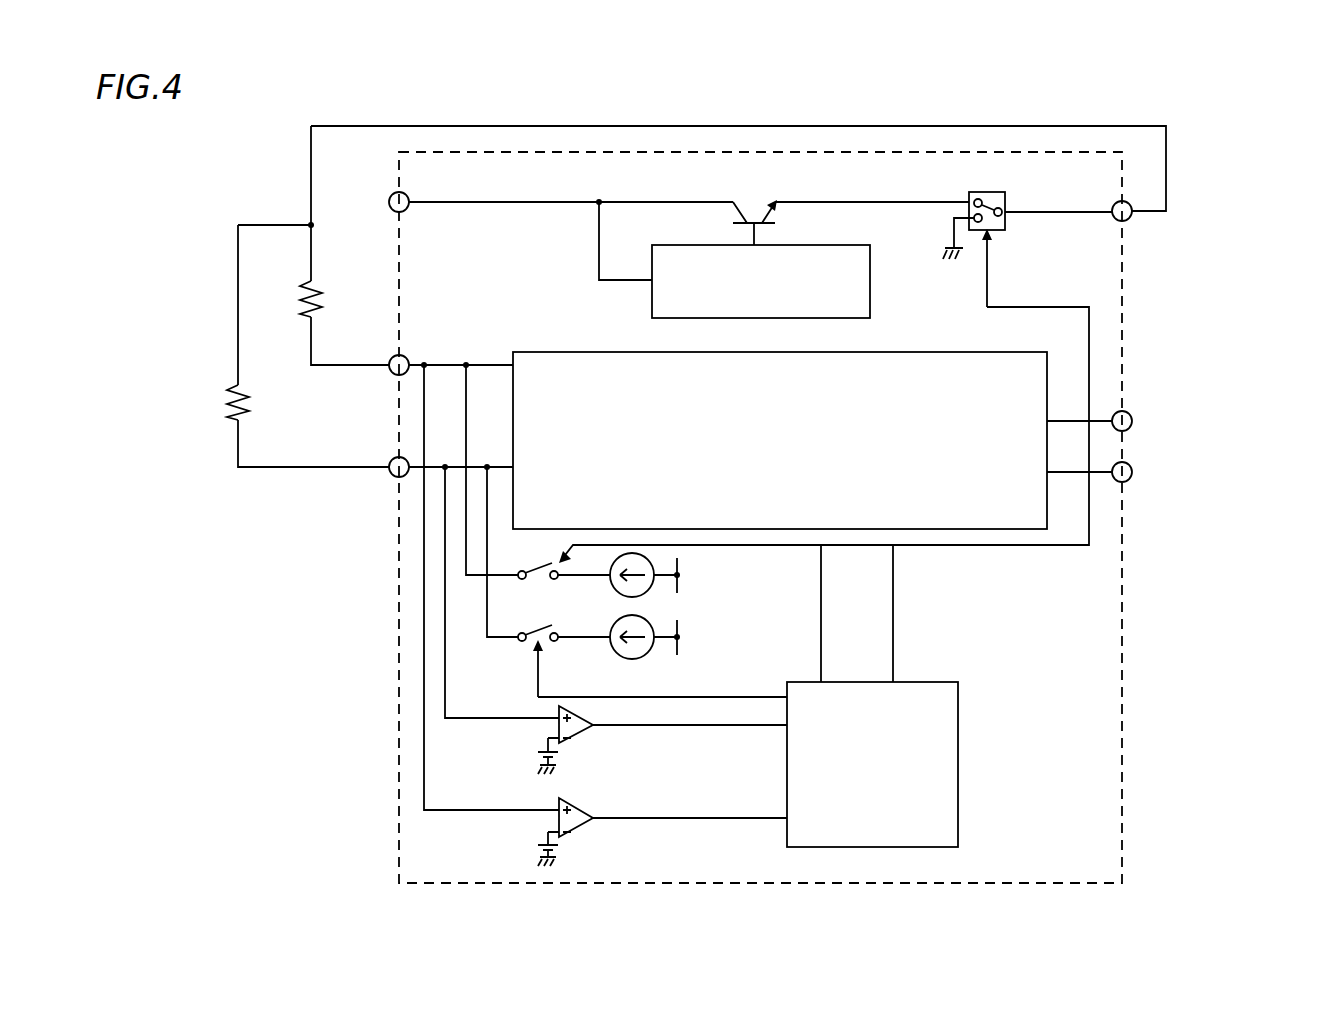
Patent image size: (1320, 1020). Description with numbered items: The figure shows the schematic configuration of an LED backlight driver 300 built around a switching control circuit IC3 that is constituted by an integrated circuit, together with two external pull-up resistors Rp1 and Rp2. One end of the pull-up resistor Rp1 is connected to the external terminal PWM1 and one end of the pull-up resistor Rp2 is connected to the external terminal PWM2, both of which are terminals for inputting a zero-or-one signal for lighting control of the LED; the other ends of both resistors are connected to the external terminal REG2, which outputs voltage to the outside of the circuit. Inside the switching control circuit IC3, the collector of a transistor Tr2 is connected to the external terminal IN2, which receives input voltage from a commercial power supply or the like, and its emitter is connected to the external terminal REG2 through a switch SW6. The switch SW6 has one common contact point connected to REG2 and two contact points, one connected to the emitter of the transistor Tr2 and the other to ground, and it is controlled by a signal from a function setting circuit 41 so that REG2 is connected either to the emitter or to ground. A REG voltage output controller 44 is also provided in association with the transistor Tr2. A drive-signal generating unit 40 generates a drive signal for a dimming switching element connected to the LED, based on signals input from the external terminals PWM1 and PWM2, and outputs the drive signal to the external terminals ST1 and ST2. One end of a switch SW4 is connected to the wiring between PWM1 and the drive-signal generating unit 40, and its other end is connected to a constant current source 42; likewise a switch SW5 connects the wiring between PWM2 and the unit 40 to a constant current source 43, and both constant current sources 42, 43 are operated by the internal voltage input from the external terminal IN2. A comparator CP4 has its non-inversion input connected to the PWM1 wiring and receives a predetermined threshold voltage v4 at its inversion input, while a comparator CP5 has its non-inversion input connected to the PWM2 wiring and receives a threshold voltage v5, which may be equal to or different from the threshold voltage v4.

The LED backlight driver 300 is at (1247, 131).
The switching control circuit IC3 is at (1122, 633).
The drive-signal generating unit 40 is at (973, 529).
The function setting circuit 41 is at (958, 752).
The constant current source 42 is at (650, 587).
The constant current source 43 is at (650, 648).
The REG voltage output controller 44 is at (870, 292).
The transistor Tr2 is at (735, 212).
The switch SW4 is at (547, 563).
The switch SW5 is at (547, 625).
The switch SW6 is at (1005, 196).
The comparator CP4 is at (570, 806).
The comparator CP5 is at (588, 728).
The threshold voltage v4 is at (559, 855).
The threshold voltage v5 is at (559, 761).
The pull-up resistor Rp1 is at (320, 291).
The pull-up resistor Rp2 is at (248, 392).
The external terminal IN2 is at (405, 193).
The external terminal REG2 is at (1128, 219).
The external terminal PWM1 is at (405, 356).
The external terminal PWM2 is at (392, 459).
The external terminal ST1 is at (1128, 429).
The external terminal ST2 is at (1128, 480).